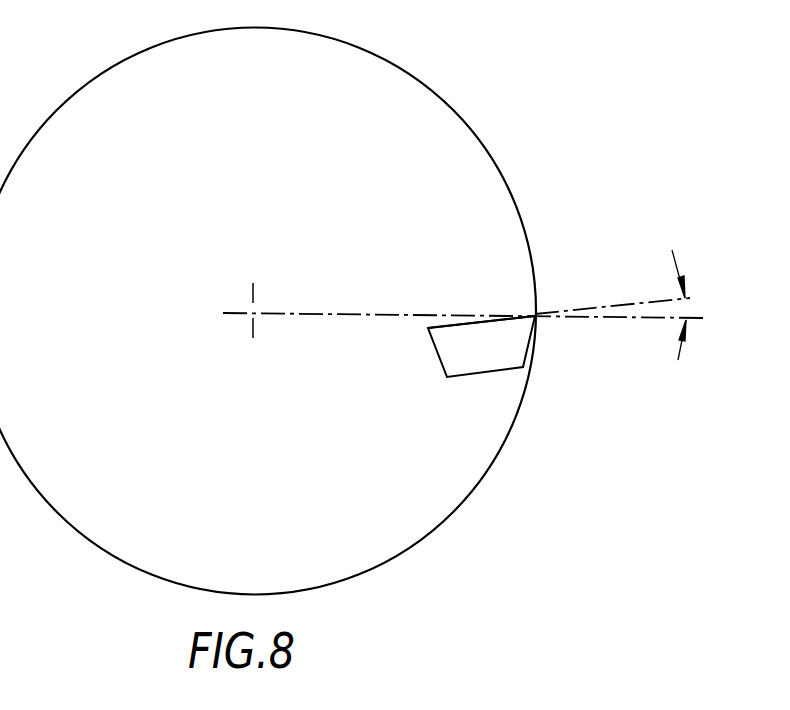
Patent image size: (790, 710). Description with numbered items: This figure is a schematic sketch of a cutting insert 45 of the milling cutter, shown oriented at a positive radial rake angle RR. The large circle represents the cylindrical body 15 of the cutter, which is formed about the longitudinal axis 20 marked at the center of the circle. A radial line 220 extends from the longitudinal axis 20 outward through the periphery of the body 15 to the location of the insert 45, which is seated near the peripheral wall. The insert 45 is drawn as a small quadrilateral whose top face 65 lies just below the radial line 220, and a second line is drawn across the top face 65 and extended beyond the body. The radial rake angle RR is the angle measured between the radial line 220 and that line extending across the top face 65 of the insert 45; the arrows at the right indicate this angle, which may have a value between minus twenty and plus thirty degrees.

The cylindrical body 15 is at (455, 108).
The longitudinal axis 20 is at (252, 312).
The radial line 220 is at (328, 312).
The cutting insert 45 is at (457, 357).
The top face 65 is at (440, 323).
The radial rake angle RR is at (687, 306).